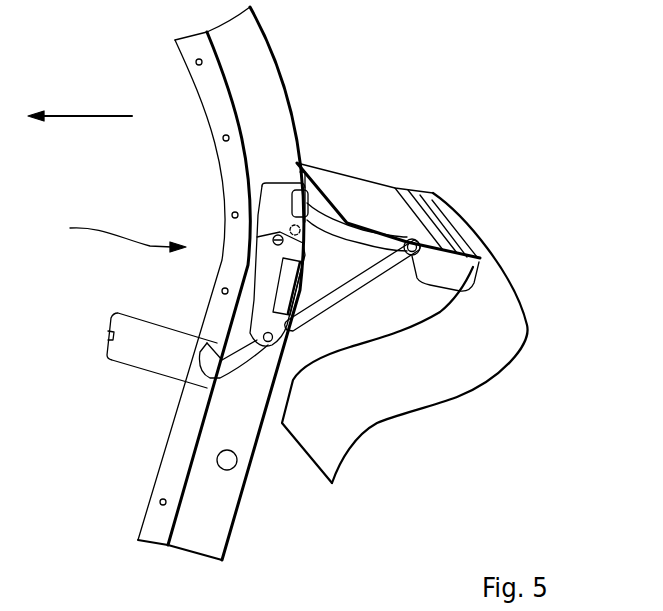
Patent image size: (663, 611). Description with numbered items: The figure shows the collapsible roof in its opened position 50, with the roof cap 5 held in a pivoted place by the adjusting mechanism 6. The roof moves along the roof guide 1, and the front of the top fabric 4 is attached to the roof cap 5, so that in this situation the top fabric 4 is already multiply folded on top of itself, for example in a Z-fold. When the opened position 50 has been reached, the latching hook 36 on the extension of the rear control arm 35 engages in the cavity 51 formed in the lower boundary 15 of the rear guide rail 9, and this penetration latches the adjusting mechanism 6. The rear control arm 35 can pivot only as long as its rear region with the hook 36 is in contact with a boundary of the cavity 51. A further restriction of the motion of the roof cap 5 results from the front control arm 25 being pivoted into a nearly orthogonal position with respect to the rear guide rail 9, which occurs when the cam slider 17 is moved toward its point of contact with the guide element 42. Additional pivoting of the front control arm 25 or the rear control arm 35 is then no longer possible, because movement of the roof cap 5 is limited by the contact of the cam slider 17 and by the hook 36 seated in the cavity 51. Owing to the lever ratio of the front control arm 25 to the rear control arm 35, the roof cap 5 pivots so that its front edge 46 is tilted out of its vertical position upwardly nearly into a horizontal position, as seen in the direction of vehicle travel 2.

The roof guide 1 is at (510, 143).
The direction of vehicle travel 2 is at (85, 113).
The top fabric 4 is at (480, 243).
The roof cap 5 is at (352, 200).
The adjusting mechanism 6 is at (119, 233).
The rear guide rail 9 is at (260, 103).
The lower boundary 15 is at (183, 488).
The cam slider 17 is at (273, 210).
The front control arm 25 is at (340, 250).
The rear control arm 35 is at (325, 295).
The latching hook 36 is at (223, 365).
The guide element 42 is at (260, 283).
The front edge 46 is at (300, 172).
The opened position 50 is at (183, 400).
The cavity 51 is at (108, 335).